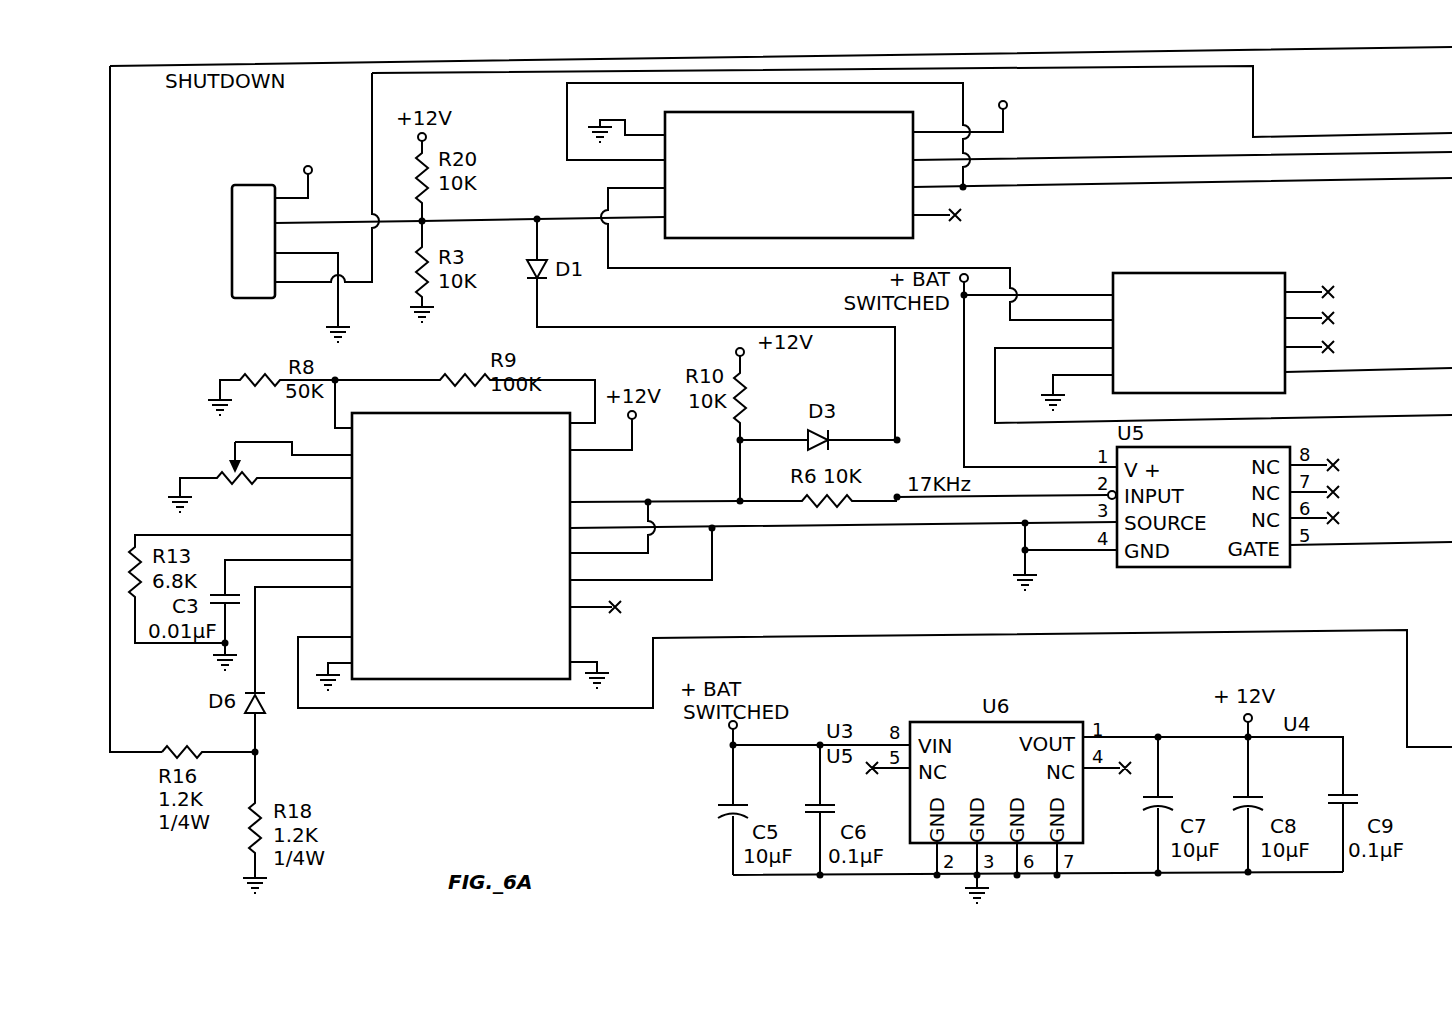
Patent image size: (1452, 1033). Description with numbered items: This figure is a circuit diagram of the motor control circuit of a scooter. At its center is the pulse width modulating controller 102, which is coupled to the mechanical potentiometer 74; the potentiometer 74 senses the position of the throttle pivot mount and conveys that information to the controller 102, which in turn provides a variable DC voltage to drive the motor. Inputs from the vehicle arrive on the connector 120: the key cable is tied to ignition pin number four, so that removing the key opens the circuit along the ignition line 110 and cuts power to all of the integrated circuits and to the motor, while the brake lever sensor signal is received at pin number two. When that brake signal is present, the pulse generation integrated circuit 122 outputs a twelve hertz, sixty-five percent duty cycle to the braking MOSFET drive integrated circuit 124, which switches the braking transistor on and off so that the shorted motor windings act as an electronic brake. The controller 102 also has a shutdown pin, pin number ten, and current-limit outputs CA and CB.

The ignition line 110 is at (372, 137).
The connector 120 is at (232, 185).
The pulse generation integrated circuit 122 is at (820, 112).
The braking MOSFET drive integrated circuit 124 is at (1198, 273).
The mechanical potentiometer 74 is at (232, 445).
The pulse width modulating controller 102 is at (490, 680).